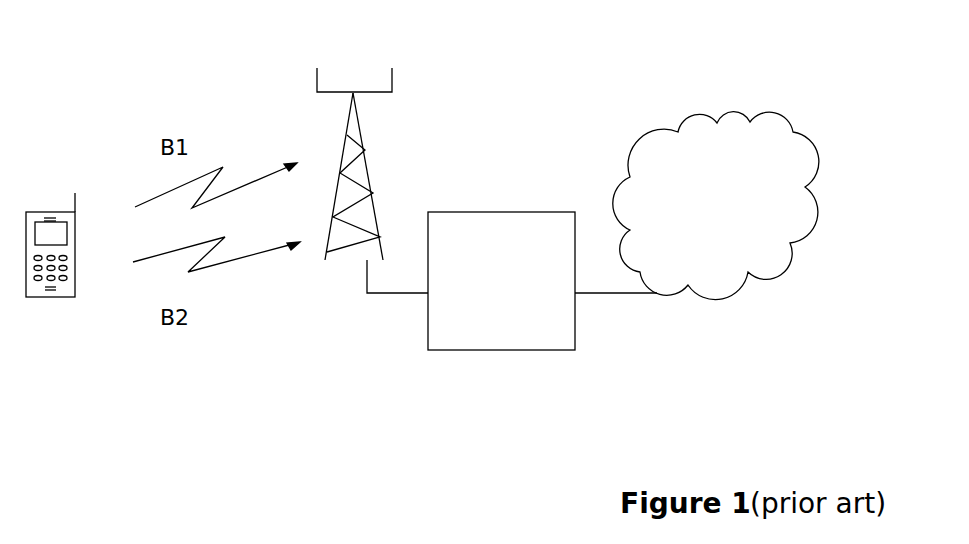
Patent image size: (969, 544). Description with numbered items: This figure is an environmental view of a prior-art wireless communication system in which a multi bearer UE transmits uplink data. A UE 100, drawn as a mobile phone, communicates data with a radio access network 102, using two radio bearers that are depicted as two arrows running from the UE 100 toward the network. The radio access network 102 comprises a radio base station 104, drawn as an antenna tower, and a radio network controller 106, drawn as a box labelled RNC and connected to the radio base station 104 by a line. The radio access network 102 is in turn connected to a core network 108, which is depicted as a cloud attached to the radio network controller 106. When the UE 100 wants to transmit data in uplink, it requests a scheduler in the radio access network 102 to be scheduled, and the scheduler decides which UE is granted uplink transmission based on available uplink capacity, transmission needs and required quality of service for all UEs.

The UE 100 is at (57, 313).
The radio access network 102 is at (478, 57).
The radio base station 104 is at (332, 268).
The radio network controller 106 is at (495, 350).
The core network 108 is at (742, 297).